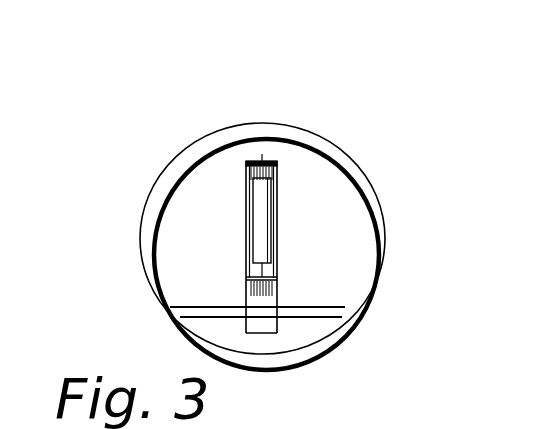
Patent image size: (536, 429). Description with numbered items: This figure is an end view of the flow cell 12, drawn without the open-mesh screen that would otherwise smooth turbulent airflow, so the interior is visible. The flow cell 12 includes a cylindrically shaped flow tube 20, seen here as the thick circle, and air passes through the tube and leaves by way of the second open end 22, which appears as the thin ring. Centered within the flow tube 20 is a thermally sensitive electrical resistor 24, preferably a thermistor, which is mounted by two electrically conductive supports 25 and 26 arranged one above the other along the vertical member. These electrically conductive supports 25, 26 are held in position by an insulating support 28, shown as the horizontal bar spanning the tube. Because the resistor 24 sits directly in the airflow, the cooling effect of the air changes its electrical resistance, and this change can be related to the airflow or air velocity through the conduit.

The flow cell 12 is at (270, 100).
The flow tube 20 is at (300, 360).
The second open end 22 is at (178, 155).
The thermally sensitive electrical resistor 24 is at (268, 228).
The electrically conductive support 25 is at (256, 297).
The electrically conductive support 26 is at (263, 160).
The insulating support 28 is at (340, 309).